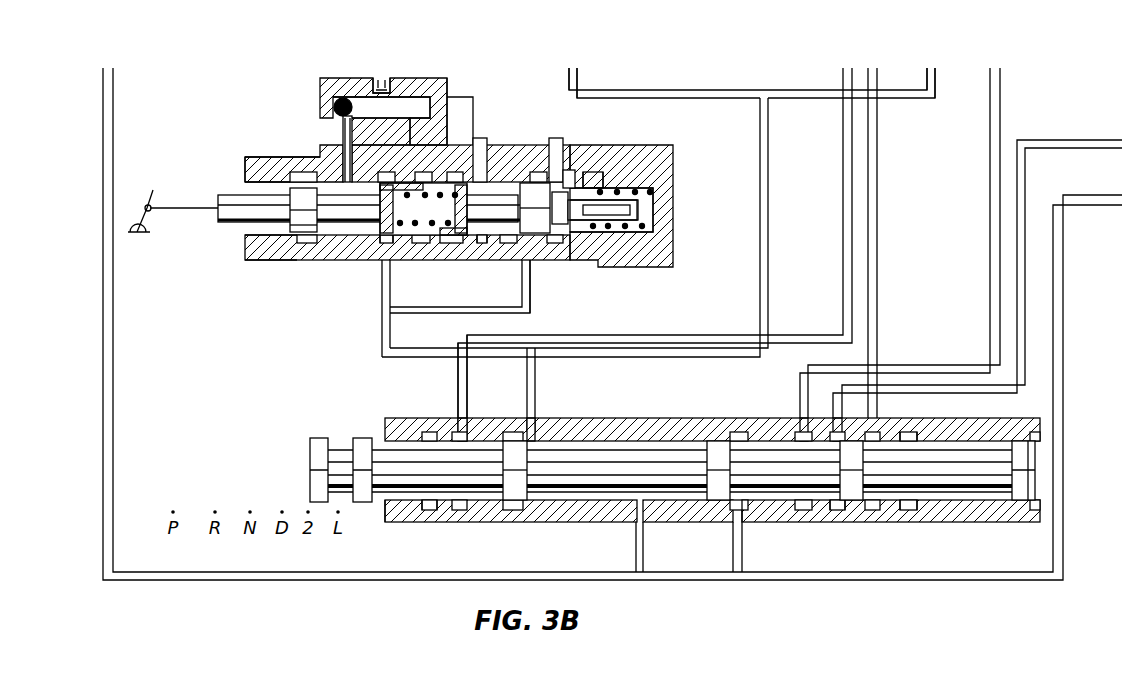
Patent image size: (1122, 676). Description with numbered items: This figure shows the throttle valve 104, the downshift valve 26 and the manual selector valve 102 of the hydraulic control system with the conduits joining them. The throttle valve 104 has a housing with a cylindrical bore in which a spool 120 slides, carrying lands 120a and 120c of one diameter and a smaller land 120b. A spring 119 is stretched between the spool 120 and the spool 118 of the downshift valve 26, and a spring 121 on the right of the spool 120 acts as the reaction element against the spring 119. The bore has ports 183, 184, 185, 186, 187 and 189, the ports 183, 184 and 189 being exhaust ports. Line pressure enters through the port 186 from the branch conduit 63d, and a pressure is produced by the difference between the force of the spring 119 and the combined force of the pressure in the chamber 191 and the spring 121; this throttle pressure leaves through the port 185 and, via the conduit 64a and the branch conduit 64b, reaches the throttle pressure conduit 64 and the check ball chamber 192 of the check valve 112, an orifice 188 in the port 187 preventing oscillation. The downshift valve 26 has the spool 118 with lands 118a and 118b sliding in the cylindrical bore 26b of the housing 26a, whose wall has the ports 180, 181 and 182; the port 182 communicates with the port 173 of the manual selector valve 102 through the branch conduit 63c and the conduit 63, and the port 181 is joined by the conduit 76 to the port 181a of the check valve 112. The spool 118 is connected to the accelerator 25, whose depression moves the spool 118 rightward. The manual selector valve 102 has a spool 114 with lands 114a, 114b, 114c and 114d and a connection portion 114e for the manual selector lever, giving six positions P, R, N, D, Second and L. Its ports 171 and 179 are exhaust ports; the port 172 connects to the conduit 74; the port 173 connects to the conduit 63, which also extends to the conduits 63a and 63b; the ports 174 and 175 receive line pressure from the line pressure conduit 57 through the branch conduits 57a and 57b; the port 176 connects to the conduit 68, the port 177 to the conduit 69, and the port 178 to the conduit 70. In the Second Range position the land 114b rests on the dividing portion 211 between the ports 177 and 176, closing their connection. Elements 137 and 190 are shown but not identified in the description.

The accelerator 25 is at (147, 200).
The downshift valve 26 is at (243, 158).
The housing 26a is at (256, 252).
The cylindrical bore 26b is at (248, 184).
The line pressure conduit 57 is at (106, 350).
The branch conduit 57a is at (644, 545).
The branch conduit 57b is at (744, 545).
The conduit 63 is at (770, 212).
The conduit 63a is at (690, 90).
The conduit 63b is at (933, 88).
The branch conduit 63c is at (383, 262).
The branch conduit 63d is at (470, 313).
The throttle pressure conduit 64 is at (452, 140).
The conduit 64a is at (505, 155).
The branch conduit 64b is at (530, 143).
The conduit 68 is at (992, 262).
The conduit 69 is at (1025, 266).
The conduit 70 is at (877, 292).
The conduit 74 is at (843, 296).
The conduit 76 is at (348, 166).
The manual selector valve 102 is at (306, 446).
The throttle valve 104 is at (670, 262).
The check valve 112 is at (449, 80).
The spool 114 is at (420, 470).
The land 114a is at (1021, 500).
The land 114b is at (855, 480).
The land 114c is at (718, 460).
The land 114d is at (512, 480).
The connection portion 114e is at (339, 455).
The spool 118 is at (234, 212).
The land 118a is at (300, 198).
The land 118b is at (372, 240).
The spring 119 is at (437, 240).
The spool 120 is at (657, 193).
The land 120a is at (532, 240).
The land 120b is at (621, 186).
The land 120c is at (485, 243).
The spring 121 is at (612, 183).
The detent ball 137 is at (342, 98).
The port 171 is at (431, 512).
The port 172 is at (463, 430).
The port 173 is at (534, 430).
The port 174 is at (632, 522).
The port 175 is at (745, 522).
The port 176 is at (802, 420).
The port 177 is at (836, 420).
The port 178 is at (887, 430).
The port 179 is at (910, 522).
The port 180 is at (302, 247).
The port 181 is at (382, 125).
The port 181a is at (334, 110).
The port 182 is at (384, 240).
The port 183 is at (421, 245).
The port 184 is at (458, 245).
The port 185 is at (480, 150).
The port 186 is at (532, 300).
The port 187 is at (595, 188).
The orifice 188 is at (570, 172).
The port 189 is at (594, 232).
The spring 190 is at (652, 210).
The chamber 191 is at (561, 228).
The check ball chamber 192 is at (386, 78).
The dividing portion 211 is at (828, 512).